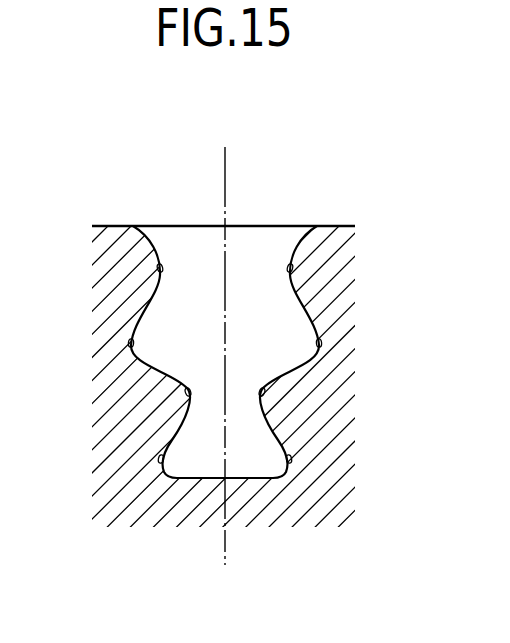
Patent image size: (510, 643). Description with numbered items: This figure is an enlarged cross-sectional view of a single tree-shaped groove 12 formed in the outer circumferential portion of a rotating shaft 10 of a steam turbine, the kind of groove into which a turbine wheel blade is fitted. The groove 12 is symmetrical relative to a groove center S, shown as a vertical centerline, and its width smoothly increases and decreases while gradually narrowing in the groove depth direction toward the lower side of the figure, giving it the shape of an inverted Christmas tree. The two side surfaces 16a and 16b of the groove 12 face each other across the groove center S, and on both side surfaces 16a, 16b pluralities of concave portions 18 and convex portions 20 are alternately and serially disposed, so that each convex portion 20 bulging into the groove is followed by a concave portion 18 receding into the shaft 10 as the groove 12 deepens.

The rotating shaft 10 is at (137, 513).
The tree-shaped groove 12 is at (260, 273).
The side surface 16a is at (172, 247).
The side surface 16b is at (277, 248).
The concave portion 18 is at (129, 346).
The convex portion 20 is at (157, 266).
The groove center S is at (222, 345).